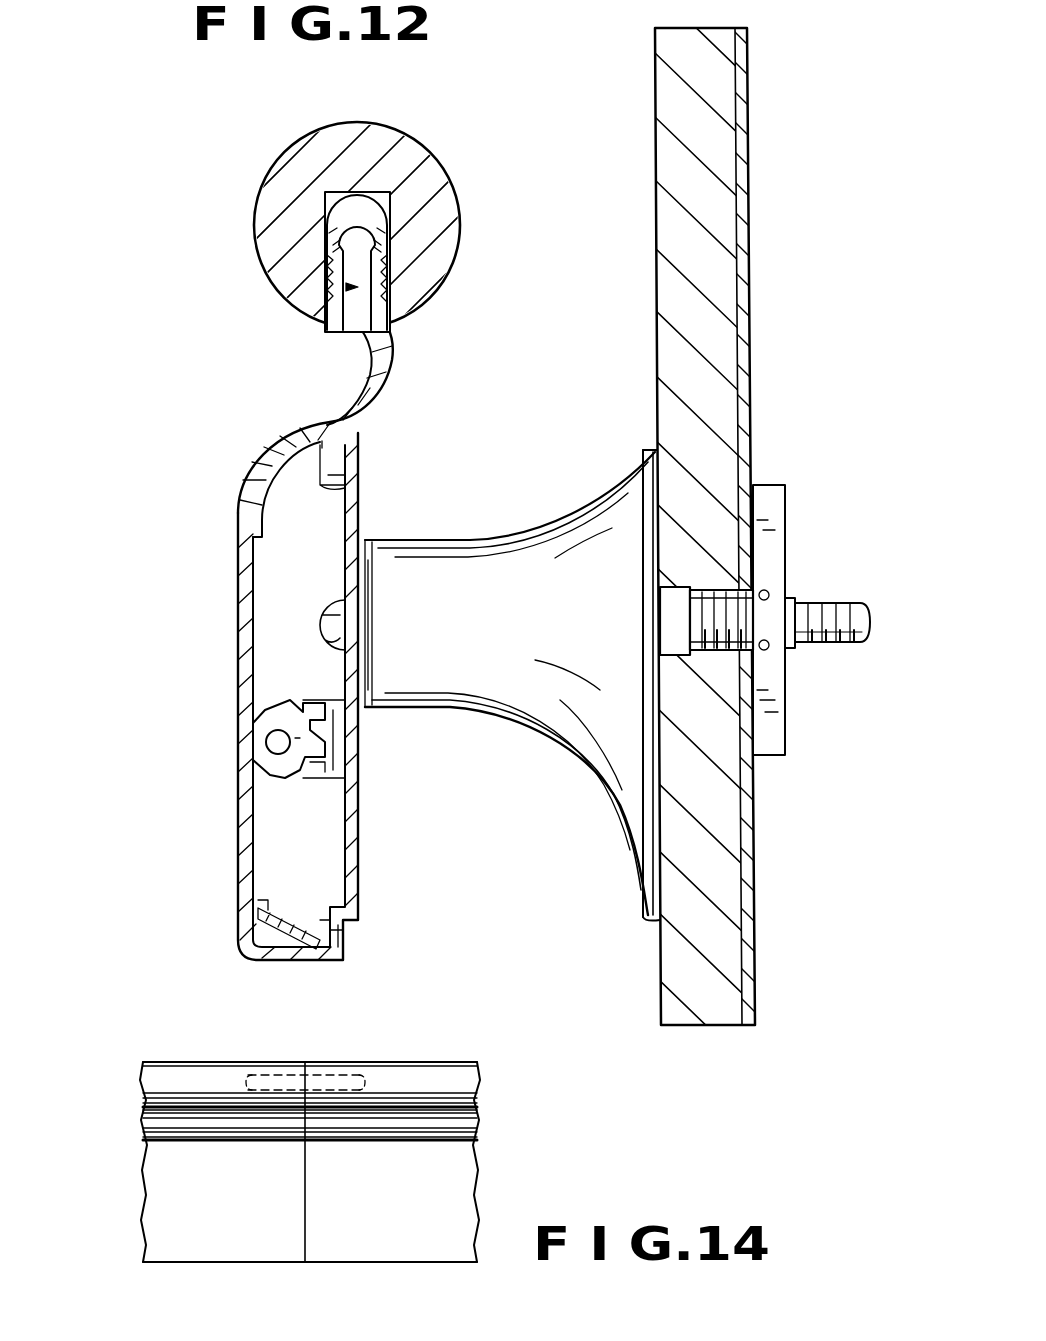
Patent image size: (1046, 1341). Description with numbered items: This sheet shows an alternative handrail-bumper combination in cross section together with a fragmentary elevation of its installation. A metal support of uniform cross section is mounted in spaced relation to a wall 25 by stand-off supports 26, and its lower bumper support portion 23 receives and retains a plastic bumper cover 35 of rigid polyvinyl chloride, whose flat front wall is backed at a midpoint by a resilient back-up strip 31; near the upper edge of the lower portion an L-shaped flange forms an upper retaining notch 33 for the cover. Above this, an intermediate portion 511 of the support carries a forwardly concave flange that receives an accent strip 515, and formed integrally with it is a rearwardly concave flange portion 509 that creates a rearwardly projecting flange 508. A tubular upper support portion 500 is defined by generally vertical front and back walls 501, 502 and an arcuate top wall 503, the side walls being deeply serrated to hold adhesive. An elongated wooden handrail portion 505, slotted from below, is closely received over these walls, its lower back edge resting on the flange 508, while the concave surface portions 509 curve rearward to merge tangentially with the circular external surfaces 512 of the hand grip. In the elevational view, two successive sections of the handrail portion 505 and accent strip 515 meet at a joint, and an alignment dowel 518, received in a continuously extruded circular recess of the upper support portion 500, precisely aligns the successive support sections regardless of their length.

In FIG. 12, the lower bumper support portion 23 is at (310, 832).
In FIG. 12, the wall 25 is at (705, 335).
In FIG. 12, the stand-off support 26 is at (445, 588).
In FIG. 12, the resilient back-up strip 31 is at (278, 720).
In FIG. 12, the upper retaining notch 33 is at (348, 483).
In FIG. 12, the bumper cover 35 is at (233, 601).
In FIG. 12, the tubular upper support portion 500 is at (332, 292).
In FIG. 12, the front wall 501 is at (322, 267).
In FIG. 12, the back wall 502 is at (383, 275).
In FIG. 12, the arcuate top wall 503 is at (322, 197).
In FIG. 12, the wooden handrail portion 505 is at (416, 238).
In FIG. 14, the wooden handrail portion 505 is at (233, 1018).
In FIG. 12, the rearwardly projecting flange 508 is at (398, 327).
In FIG. 12, the rearwardly concave flange portion 509 is at (393, 345).
In FIG. 12, the intermediate portion 511 is at (381, 400).
In FIG. 12, the circular external surfaces 512 is at (455, 192).
In FIG. 12, the accent strip 515 is at (367, 378).
In FIG. 14, the accent strip 515 is at (453, 1122).
In FIG. 14, the alignment dowel 518 is at (333, 1082).